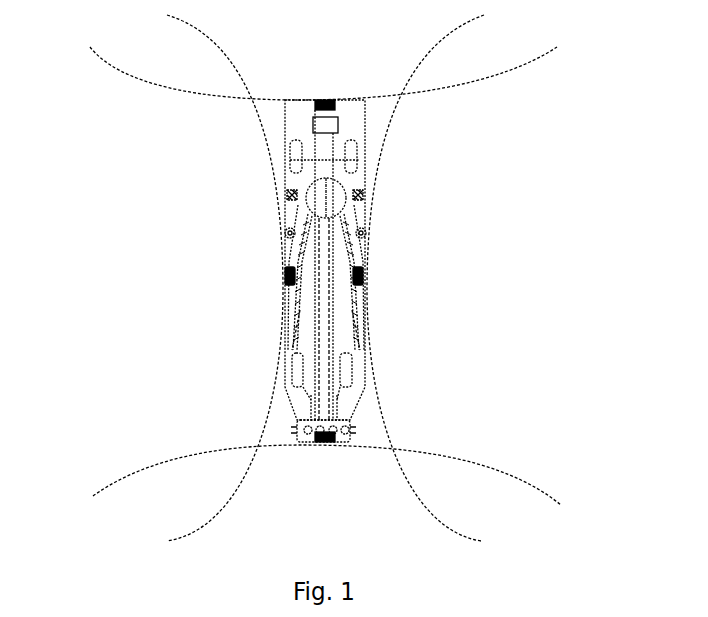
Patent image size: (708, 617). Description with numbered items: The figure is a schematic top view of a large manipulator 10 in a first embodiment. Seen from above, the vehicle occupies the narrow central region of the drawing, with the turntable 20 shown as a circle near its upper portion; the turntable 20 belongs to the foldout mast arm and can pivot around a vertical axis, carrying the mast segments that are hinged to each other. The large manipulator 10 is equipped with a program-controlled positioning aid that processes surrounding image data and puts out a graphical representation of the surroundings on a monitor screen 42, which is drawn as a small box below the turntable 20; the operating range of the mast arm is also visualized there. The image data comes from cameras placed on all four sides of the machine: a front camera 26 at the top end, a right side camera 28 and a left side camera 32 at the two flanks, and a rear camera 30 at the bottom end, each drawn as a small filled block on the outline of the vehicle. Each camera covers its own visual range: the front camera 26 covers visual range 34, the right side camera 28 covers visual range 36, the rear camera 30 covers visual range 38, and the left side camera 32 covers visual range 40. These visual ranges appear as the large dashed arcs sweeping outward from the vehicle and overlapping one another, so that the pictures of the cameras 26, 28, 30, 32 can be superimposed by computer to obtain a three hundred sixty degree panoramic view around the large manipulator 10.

The large manipulator 10 is at (590, 144).
The turntable 20 is at (312, 195).
The front camera 26 is at (330, 98).
The right side camera 28 is at (364, 273).
The rear camera 30 is at (323, 448).
The left side camera 32 is at (284, 275).
The visual range 34 is at (110, 67).
The visual range 36 is at (426, 506).
The visual range 38 is at (502, 465).
The visual range 40 is at (217, 513).
The monitor screen 42 is at (338, 125).